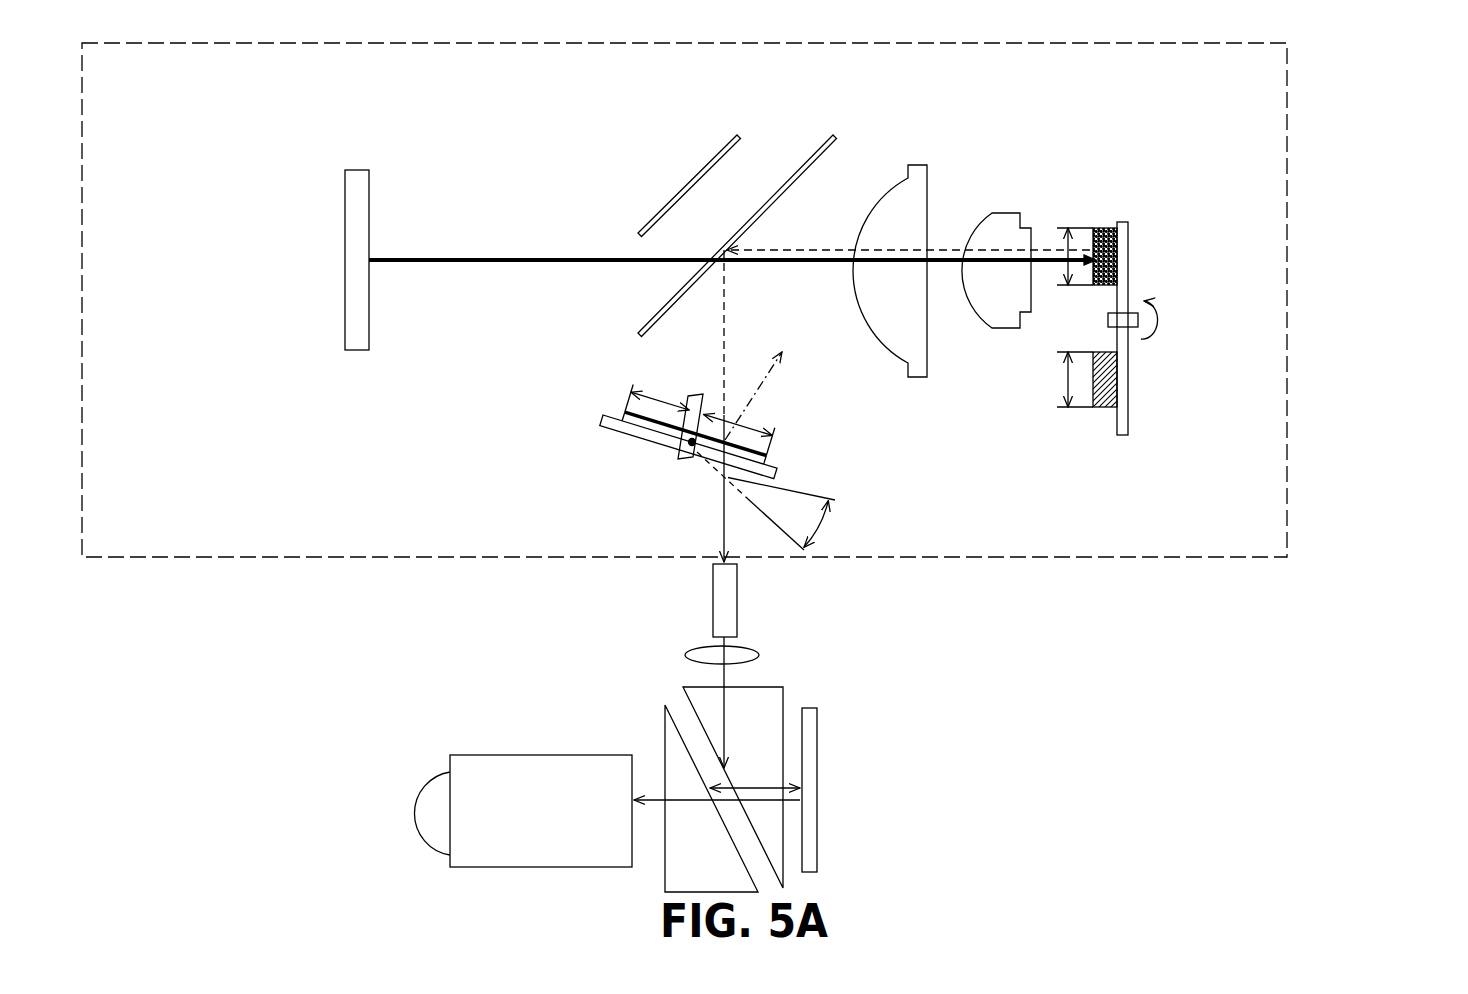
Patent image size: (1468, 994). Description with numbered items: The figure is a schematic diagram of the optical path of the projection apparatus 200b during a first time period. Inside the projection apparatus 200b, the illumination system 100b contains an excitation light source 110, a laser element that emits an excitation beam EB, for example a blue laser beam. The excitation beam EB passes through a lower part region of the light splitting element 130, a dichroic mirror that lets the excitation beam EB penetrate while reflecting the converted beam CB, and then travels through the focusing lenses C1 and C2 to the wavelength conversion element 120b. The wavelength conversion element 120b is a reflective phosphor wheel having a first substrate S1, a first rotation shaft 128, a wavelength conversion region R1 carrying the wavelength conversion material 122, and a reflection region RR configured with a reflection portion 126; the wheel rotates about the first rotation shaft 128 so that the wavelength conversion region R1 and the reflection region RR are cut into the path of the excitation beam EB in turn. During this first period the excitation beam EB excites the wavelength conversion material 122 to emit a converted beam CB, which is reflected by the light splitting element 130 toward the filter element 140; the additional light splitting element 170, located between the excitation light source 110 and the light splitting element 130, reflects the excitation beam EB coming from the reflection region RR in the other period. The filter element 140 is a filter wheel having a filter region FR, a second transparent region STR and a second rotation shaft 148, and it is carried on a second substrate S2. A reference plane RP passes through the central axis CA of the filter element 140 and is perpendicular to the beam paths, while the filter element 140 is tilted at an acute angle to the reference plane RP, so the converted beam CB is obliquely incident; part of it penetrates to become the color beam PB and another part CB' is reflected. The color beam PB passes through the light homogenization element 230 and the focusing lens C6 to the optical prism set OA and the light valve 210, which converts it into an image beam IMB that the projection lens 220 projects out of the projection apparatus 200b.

The illumination system 100b is at (1287, 87).
The excitation light source 110 is at (358, 170).
The excitation beam EB is at (1002, 250).
The light splitting element 170 is at (713, 156).
The light splitting element 130 is at (819, 148).
The converted beam CB is at (907, 332).
The another part of the converted beam CB' is at (773, 385).
The focusing lens C1 is at (915, 176).
The focusing lens C2 is at (1002, 218).
The wavelength conversion element 120b is at (1152, 326).
The first substrate S1 is at (1122, 437).
The wavelength conversion material 122 is at (1105, 228).
The wavelength conversion region R1 is at (1071, 250).
The reflection portion 126 is at (1100, 408).
The reflection region RR is at (1062, 396).
The first rotation shaft 128 is at (1135, 316).
The filter element 140 is at (715, 445).
The second substrate S2 is at (603, 424).
The second transparent region STR is at (650, 408).
The second rotation shaft 148 is at (680, 460).
The central axis CA is at (684, 447).
The filter region FR is at (768, 440).
The reference plane RP is at (750, 500).
The color beam PB is at (726, 538).
The light homogenization element 230 is at (712, 572).
The focusing lens C6 is at (760, 656).
The optical prism set OA is at (706, 698).
The image beam IMB is at (651, 803).
The light valve 210 is at (813, 835).
The projection lens 220 is at (433, 803).
The projection apparatus 200b is at (1208, 747).